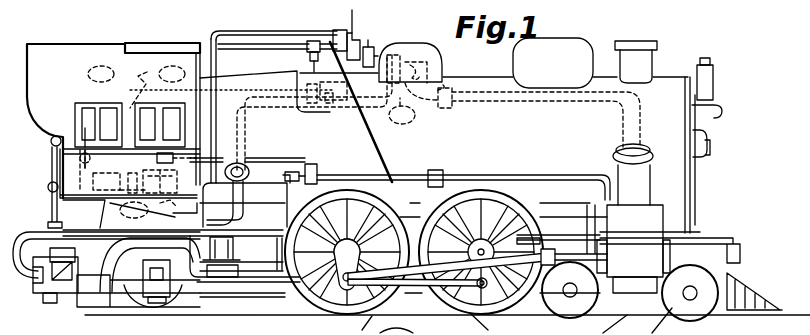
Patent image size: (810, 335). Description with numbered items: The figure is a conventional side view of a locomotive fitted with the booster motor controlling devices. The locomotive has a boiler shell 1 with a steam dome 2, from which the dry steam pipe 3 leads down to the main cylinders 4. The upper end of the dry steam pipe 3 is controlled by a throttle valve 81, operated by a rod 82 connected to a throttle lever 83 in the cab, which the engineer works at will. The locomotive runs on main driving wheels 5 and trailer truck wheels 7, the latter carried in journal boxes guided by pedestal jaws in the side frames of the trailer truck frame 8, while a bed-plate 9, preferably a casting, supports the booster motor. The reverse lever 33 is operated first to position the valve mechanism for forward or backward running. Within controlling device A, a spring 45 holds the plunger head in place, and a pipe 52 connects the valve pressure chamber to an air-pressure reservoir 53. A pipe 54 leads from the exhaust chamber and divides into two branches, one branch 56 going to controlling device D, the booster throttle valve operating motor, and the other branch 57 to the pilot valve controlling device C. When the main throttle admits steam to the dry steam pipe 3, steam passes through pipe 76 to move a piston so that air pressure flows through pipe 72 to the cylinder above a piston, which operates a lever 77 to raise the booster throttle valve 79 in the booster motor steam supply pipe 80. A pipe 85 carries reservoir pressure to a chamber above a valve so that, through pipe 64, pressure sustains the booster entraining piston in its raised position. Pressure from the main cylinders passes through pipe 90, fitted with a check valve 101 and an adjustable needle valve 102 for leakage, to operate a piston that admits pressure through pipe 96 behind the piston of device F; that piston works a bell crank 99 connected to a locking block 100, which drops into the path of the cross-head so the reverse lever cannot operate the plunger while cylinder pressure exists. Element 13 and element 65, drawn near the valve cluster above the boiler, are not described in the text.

The shell of locomotive boiler 1 is at (477, 148).
The steam dome 2 is at (415, 50).
The dry steam pipe 3 is at (534, 104).
The main cylinders 4 is at (633, 229).
The main driving wheels 5 is at (398, 292).
The trailer truck wheels 7 is at (170, 305).
The trailer truck frame 8 is at (125, 300).
The bed-plate 9 is at (52, 303).
The coupler 13 is at (42, 295).
The reverse lever 33 is at (83, 128).
The spring 45 is at (250, 176).
The pipe 52 is at (166, 211).
The air-pressure reservoir 53 is at (246, 201).
The pipe 54 is at (228, 114).
The branch pipe 56 is at (277, 57).
The branch pipe 57 is at (333, 32).
The pipe 64 is at (290, 46).
The valve stem 65 is at (366, 19).
The pipe 72 is at (343, 38).
The pipe 76 is at (447, 86).
The lever 77 is at (318, 103).
The throttle valve 79 is at (337, 102).
The booster motor steam supply pipe 80 is at (33, 232).
The throttle valve 81 is at (408, 48).
The rod 82 is at (170, 88).
The throttle lever 83 is at (130, 105).
The pipe 85 is at (378, 150).
The pipe 90 is at (387, 177).
The pipe 96 is at (265, 158).
The bell crank 99 is at (137, 192).
The locking block 100 is at (140, 172).
The check valve 101 is at (434, 170).
The adjustable needle valve 102 is at (308, 163).
The controlling device C is at (370, 48).
The controlling device D is at (303, 56).